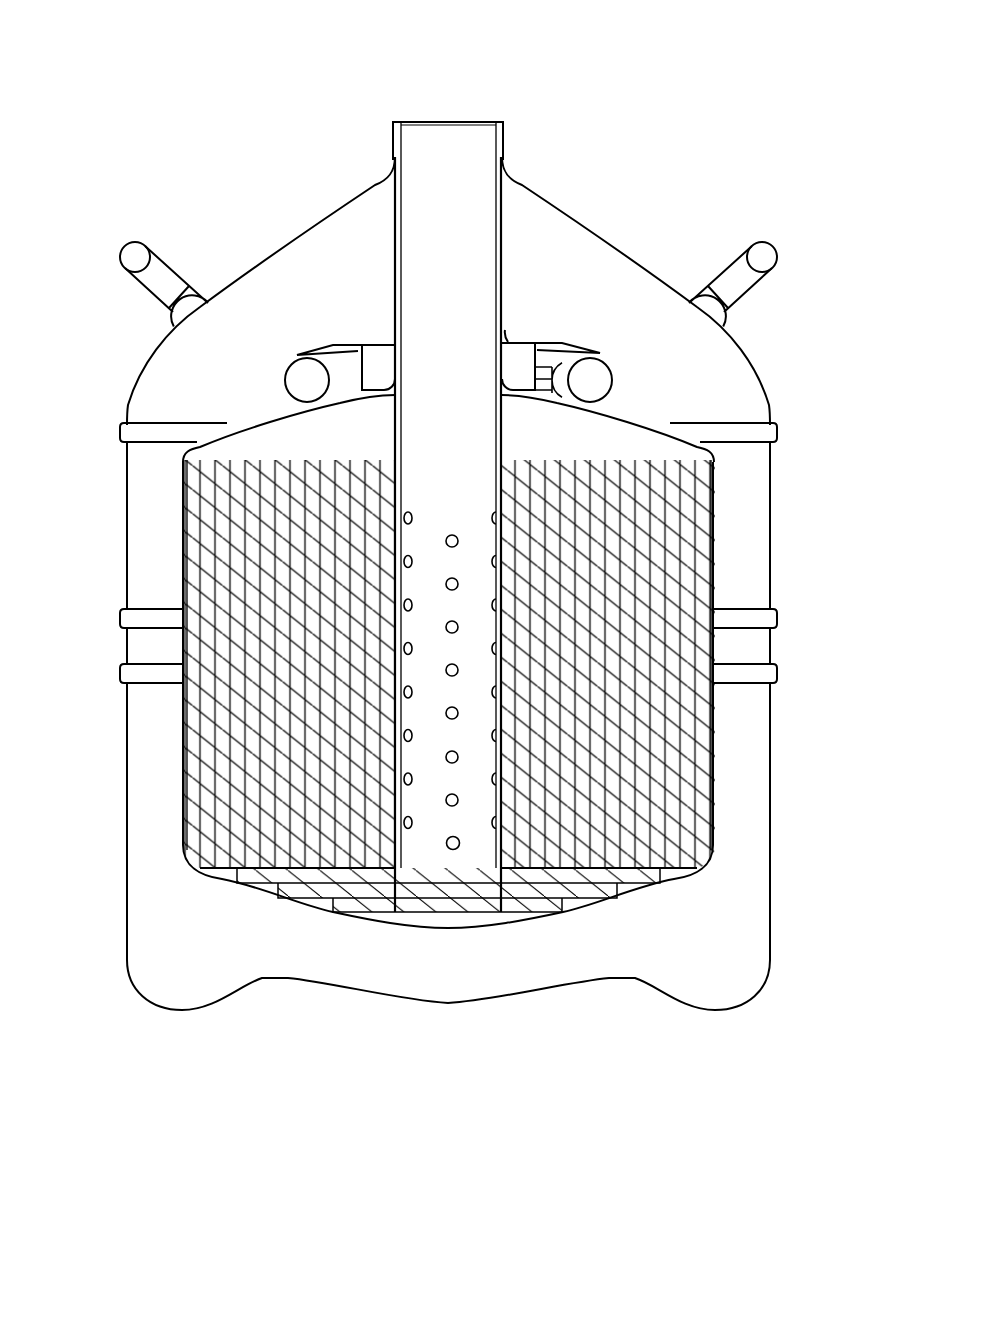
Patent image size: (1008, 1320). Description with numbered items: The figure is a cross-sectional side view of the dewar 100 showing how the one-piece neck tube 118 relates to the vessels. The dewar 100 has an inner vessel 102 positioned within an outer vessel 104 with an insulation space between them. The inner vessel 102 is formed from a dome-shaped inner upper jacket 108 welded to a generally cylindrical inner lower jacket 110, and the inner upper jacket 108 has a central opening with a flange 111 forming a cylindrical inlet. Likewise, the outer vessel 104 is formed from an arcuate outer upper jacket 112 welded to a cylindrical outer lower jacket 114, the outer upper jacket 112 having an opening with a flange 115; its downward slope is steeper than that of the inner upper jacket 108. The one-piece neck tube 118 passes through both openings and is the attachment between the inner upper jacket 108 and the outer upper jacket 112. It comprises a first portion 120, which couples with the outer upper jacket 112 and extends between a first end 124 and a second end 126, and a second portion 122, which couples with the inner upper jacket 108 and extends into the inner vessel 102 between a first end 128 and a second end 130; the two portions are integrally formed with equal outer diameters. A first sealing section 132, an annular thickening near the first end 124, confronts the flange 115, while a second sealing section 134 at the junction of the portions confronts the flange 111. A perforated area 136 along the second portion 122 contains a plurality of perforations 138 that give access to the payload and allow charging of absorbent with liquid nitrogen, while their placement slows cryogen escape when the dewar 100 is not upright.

The dewar 100 is at (715, 67).
The inner vessel 102 is at (160, 543).
The outer vessel 104 is at (800, 419).
The inner upper jacket 108 is at (213, 433).
The inner lower jacket 110 is at (183, 703).
The flange 111 is at (392, 333).
The outer upper jacket 112 is at (653, 273).
The outer lower jacket 114 is at (771, 783).
The flange 115 is at (394, 146).
The one-piece neck tube 118 is at (395, 262).
The first portion 120 is at (377, 218).
The second portion 122 is at (518, 491).
The first end 124 is at (537, 75).
The second end 126 is at (512, 307).
The first end 128 is at (530, 322).
The second end 130 is at (403, 875).
The first sealing section 132 is at (395, 132).
The second sealing section 134 is at (395, 340).
The perforated area 136 is at (482, 657).
The perforations 138 is at (453, 850).